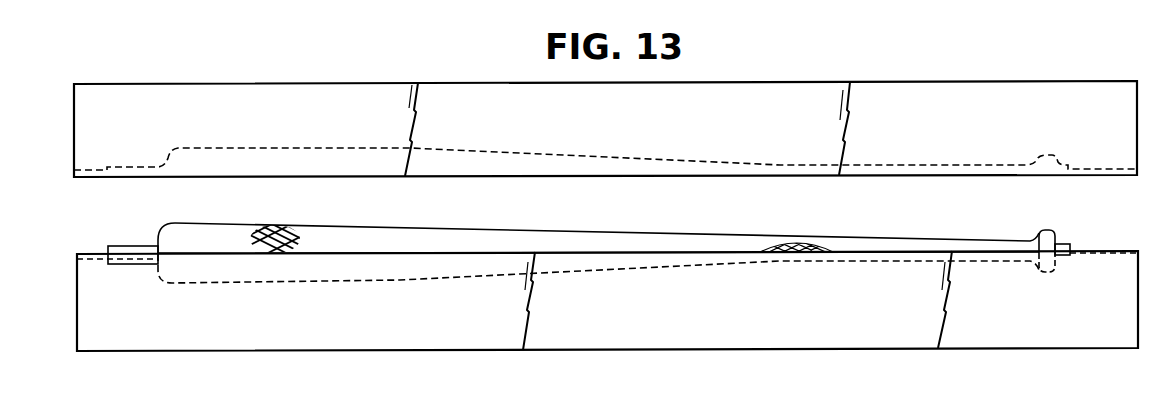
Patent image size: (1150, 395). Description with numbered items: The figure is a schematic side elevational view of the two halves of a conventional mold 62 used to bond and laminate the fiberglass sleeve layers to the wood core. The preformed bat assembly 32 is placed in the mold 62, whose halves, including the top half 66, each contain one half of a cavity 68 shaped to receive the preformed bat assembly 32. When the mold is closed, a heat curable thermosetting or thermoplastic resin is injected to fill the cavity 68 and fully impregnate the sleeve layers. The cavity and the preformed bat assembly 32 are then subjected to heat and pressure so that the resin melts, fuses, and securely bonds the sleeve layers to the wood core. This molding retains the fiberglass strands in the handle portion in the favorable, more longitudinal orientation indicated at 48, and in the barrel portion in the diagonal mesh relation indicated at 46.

The preformed bat assembly 32 is at (360, 238).
The diagonal mesh fiber orientation in barrel portion 46 is at (275, 253).
The longitudinal fiber orientation in handle portion 48 is at (795, 241).
The mold 62 is at (782, 71).
The top half of mold 66 is at (980, 87).
The cavity 68 is at (245, 147).